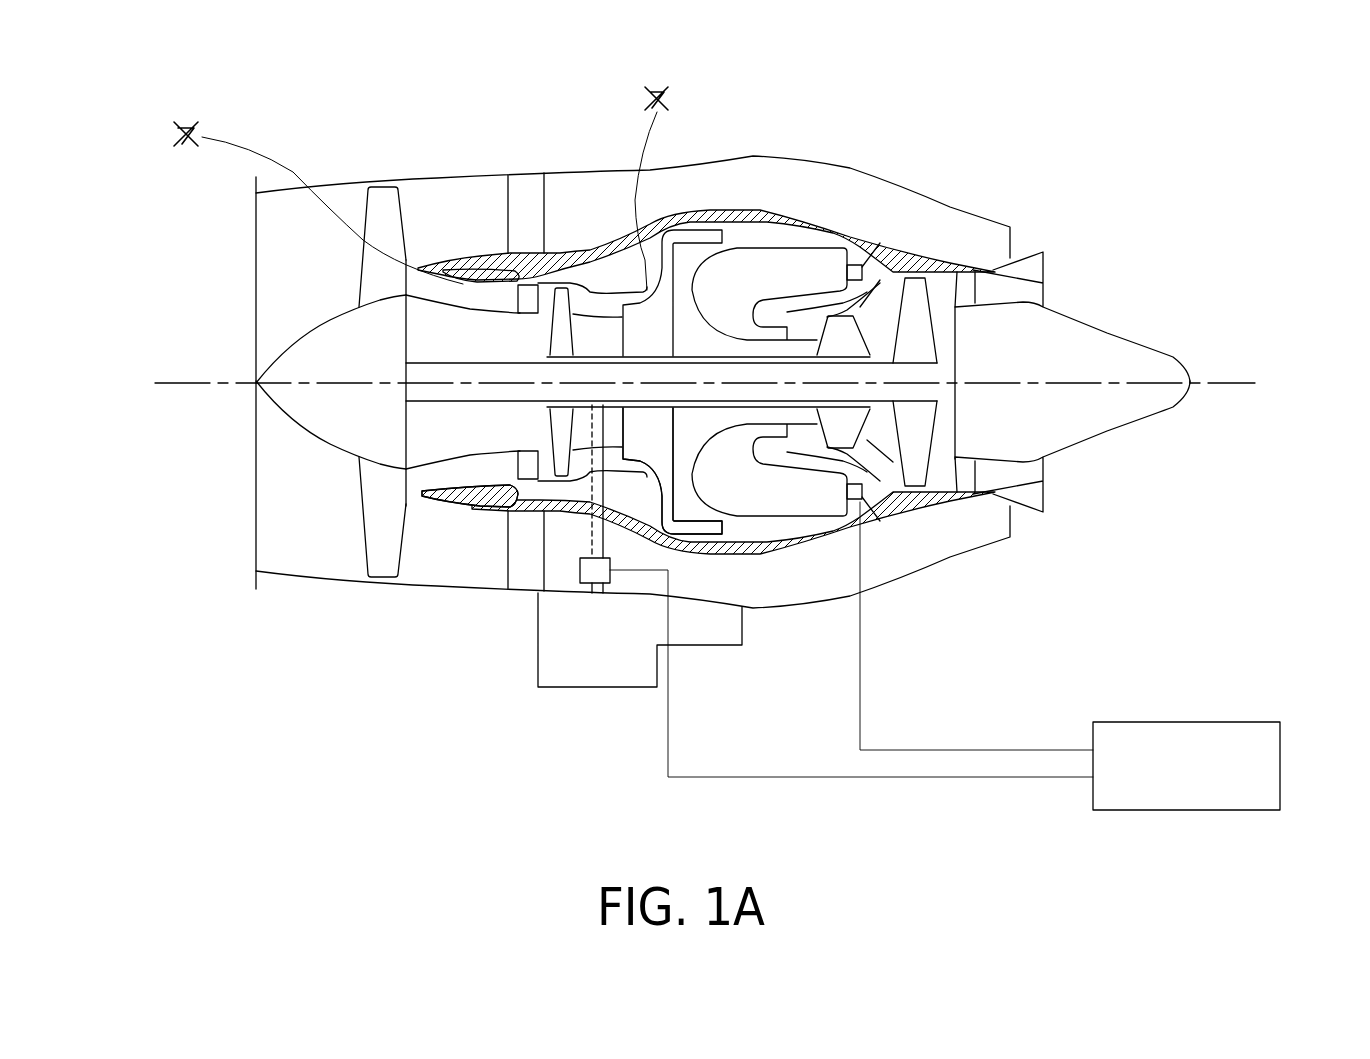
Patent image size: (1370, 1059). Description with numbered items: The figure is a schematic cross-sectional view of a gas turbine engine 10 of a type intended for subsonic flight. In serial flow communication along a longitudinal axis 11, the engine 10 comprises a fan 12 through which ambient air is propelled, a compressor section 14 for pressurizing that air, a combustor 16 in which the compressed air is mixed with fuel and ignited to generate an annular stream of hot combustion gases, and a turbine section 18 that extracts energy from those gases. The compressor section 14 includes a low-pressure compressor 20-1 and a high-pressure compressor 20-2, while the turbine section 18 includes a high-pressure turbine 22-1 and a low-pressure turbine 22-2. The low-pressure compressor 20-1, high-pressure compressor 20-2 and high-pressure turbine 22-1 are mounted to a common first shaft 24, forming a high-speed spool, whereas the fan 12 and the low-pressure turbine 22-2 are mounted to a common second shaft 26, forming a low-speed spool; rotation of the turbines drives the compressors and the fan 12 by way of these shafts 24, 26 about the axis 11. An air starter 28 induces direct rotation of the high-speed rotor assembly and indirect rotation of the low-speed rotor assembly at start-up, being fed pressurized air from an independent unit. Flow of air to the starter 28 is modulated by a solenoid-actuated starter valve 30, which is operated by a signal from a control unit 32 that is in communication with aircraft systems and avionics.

The gas turbine engine 10 is at (899, 114).
The longitudinal axis 11 is at (1222, 383).
The fan 12 is at (380, 510).
The compressor section 14 is at (592, 295).
The combustor 16 is at (770, 263).
The turbine section 18 is at (880, 437).
The low-pressure compressor 20-1 is at (515, 500).
The high-pressure compressor 20-2 is at (663, 458).
The high-pressure turbine 22-1 is at (862, 305).
The low-pressure turbine 22-2 is at (920, 330).
The first shaft 24 is at (780, 423).
The second shaft 26 is at (880, 400).
The air starter 28 is at (592, 517).
The starter valve 30 is at (592, 567).
The control unit 32 is at (1275, 803).